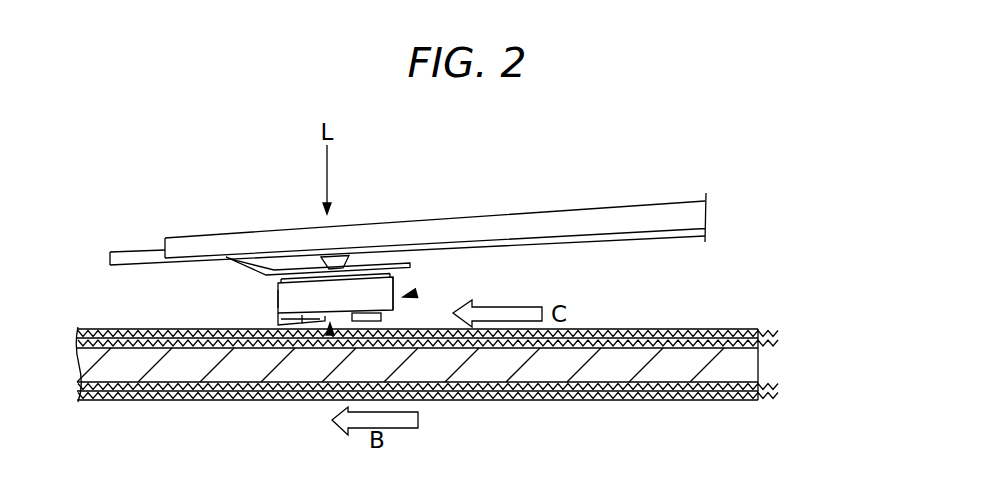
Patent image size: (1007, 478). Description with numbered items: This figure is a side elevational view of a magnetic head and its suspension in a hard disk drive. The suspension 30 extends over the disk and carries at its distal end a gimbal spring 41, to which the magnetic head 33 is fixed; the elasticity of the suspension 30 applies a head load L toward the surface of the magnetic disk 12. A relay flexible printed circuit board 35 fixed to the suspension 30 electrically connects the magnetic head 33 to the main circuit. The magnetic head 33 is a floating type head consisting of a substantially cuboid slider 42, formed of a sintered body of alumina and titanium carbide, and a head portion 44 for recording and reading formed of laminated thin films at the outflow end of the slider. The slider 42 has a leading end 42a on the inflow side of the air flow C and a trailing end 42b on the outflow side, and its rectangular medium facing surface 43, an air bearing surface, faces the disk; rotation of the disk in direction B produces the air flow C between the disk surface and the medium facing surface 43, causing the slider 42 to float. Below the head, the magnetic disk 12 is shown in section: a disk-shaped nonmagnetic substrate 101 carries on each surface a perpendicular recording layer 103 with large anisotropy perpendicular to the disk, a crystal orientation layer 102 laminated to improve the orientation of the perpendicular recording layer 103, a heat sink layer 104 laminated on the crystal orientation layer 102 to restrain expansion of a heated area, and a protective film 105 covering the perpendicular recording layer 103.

The magnetic disk 12 is at (722, 314).
The suspension 30 is at (583, 221).
The magnetic head 33 is at (421, 292).
The relay flexible printed circuit board 35 is at (649, 238).
The gimbal spring 41 is at (396, 262).
The slider 42 is at (308, 287).
The leading end 42a is at (397, 287).
The trailing end 42b is at (277, 313).
The medium facing surface 43 is at (329, 335).
The head portion 44 is at (285, 299).
The substrate 101 is at (591, 373).
The crystal orientation layer 102 is at (649, 338).
The perpendicular recording layer 103 is at (700, 328).
The heat sink layer 104 is at (759, 356).
The protective film 105 is at (748, 329).